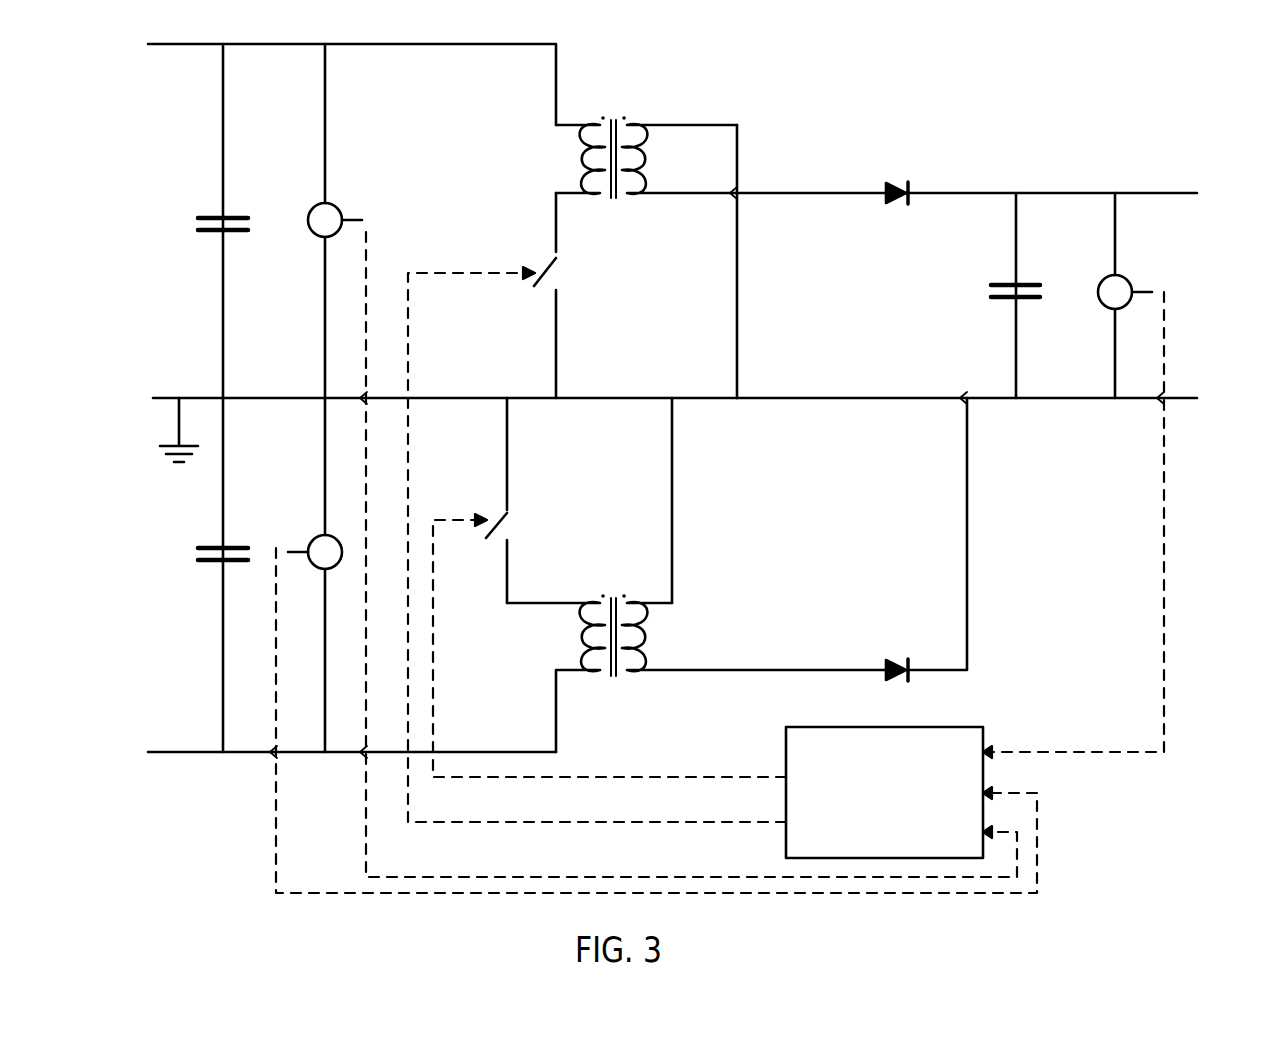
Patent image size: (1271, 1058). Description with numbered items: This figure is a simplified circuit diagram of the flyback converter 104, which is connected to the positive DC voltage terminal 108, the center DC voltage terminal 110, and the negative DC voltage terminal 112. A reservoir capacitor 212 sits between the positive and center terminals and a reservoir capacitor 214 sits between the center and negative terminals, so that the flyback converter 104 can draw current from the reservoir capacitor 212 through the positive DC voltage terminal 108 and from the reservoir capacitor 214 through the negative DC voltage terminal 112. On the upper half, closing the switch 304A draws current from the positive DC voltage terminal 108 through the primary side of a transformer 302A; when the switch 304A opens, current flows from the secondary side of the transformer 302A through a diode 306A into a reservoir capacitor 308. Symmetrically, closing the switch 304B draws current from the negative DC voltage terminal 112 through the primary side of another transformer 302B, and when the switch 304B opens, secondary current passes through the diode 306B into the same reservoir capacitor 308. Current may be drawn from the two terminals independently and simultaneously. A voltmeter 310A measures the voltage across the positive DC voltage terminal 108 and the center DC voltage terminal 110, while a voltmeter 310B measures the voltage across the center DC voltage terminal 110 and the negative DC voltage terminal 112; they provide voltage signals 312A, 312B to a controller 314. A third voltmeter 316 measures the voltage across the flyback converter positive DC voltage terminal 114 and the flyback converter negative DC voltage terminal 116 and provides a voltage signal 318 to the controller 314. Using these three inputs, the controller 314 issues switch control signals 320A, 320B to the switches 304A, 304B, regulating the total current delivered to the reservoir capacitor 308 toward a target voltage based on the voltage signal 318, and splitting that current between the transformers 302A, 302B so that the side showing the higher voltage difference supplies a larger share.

The flyback converter 104 is at (92, 108).
The positive DC voltage terminal 108 is at (163, 45).
The center DC voltage terminal 110 is at (158, 398).
The negative DC voltage terminal 112 is at (160, 752).
The flyback converter positive DC voltage terminal 114 is at (1197, 193).
The flyback converter negative DC voltage terminal 116 is at (1197, 398).
The reservoir capacitor 212 is at (215, 217).
The reservoir capacitor 214 is at (215, 547).
The transformer 302A is at (582, 181).
The transformer 302B is at (582, 659).
The switch 304A is at (550, 262).
The switch 304B is at (500, 511).
The diode 306A is at (910, 191).
The diode 306B is at (910, 668).
The reservoir capacitor 308 is at (1035, 284).
The voltmeter 310A is at (340, 212).
The voltmeter 310B is at (312, 542).
The voltage signal 312A is at (1037, 862).
The voltage signal 312B is at (1037, 800).
The controller 314 is at (970, 727).
The voltmeter 316 is at (1132, 282).
The voltage signal 318 is at (1164, 492).
The switch control signal 320A is at (679, 822).
The switch control signal 320B is at (706, 777).